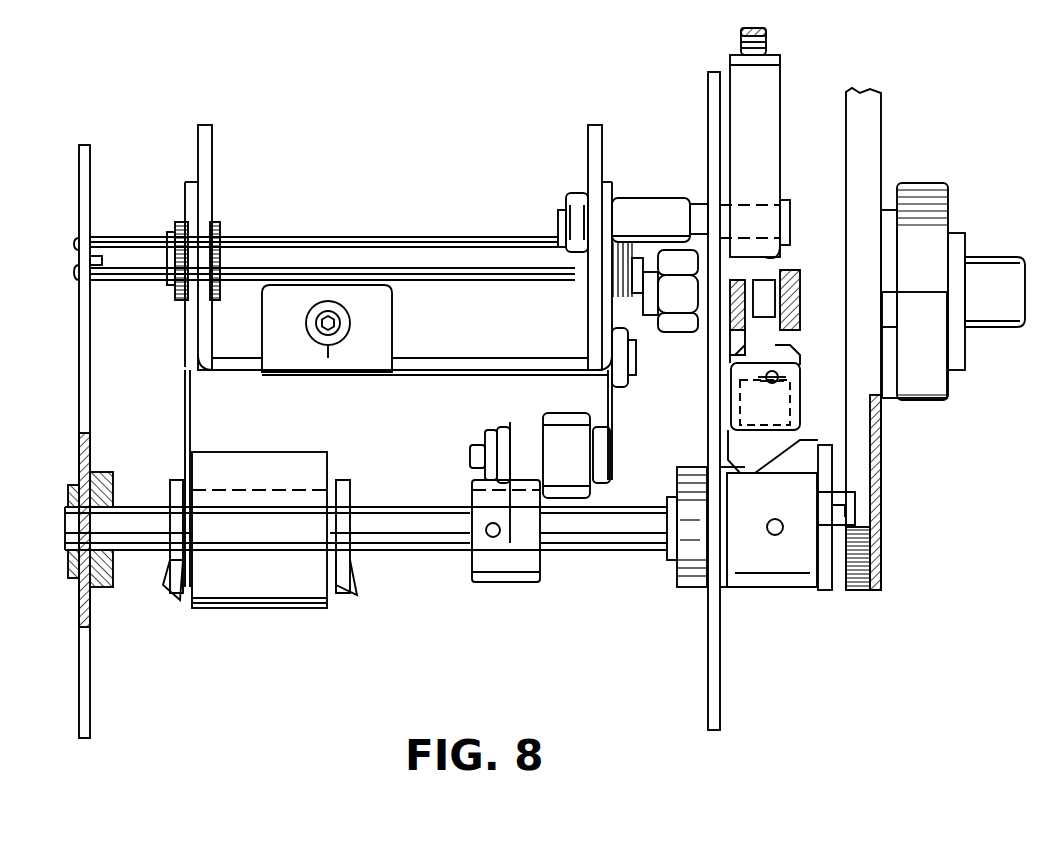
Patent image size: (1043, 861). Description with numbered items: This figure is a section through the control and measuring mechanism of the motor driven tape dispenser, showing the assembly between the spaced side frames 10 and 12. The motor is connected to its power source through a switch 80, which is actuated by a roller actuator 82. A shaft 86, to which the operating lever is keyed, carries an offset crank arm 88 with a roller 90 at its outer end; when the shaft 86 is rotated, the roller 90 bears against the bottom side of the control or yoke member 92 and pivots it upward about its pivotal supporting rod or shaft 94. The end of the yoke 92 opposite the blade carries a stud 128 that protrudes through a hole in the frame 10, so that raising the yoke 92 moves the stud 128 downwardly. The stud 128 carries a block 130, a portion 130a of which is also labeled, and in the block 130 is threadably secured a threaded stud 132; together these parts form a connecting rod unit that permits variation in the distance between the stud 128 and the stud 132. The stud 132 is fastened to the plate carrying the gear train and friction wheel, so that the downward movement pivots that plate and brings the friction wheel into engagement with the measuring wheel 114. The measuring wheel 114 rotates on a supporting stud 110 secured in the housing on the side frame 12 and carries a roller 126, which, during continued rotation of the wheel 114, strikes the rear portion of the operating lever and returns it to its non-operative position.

The side frame 10 is at (712, 635).
The side frame 12 is at (78, 638).
The switch 80 is at (748, 380).
The roller actuator 82 is at (767, 307).
The shaft 86 is at (602, 545).
The offset crank arm 88 is at (517, 577).
The roller 90 is at (560, 423).
The yoke member 92 is at (418, 437).
The pivotal supporting shaft 94 is at (455, 247).
The supporting stud 110 is at (1017, 240).
The measuring wheel 114 is at (873, 543).
The roller 126 is at (840, 293).
The stud 128 is at (665, 188).
The block 130 is at (763, 92).
The curved edge 130a is at (790, 257).
The threaded stud 132 is at (767, 32).